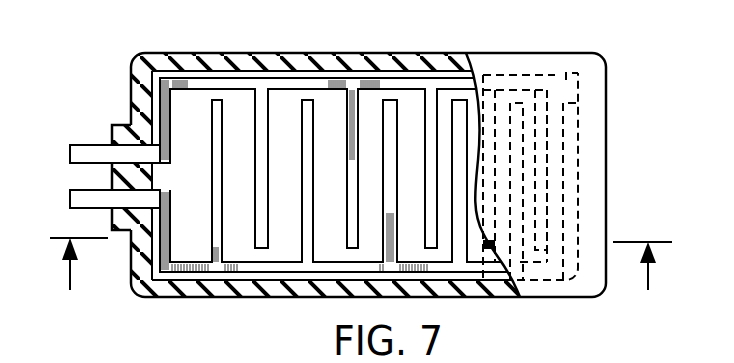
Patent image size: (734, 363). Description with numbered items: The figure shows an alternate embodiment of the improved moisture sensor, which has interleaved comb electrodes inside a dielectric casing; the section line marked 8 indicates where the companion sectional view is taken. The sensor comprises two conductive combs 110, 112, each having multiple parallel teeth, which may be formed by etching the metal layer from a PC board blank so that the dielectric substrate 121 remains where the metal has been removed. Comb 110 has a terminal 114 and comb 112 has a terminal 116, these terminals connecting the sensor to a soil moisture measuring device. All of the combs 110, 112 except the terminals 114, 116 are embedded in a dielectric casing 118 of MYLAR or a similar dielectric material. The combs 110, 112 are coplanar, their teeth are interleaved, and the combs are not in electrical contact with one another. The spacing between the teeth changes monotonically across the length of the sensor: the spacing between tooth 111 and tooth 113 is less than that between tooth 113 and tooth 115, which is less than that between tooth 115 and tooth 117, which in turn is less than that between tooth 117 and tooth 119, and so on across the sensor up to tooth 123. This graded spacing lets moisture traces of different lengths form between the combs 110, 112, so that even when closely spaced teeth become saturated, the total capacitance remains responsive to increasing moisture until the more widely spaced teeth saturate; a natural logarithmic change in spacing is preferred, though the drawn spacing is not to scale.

The conductive comb 110 is at (231, 78).
The conductive comb 112 is at (245, 267).
The dielectric casing 118 is at (138, 113).
The terminal 114 is at (82, 155).
The terminal 116 is at (78, 202).
The tooth 123 is at (208, 107).
The dielectric substrate 121 is at (305, 100).
The tooth 119 is at (460, 100).
The tooth 117 is at (485, 250).
The tooth 115 is at (515, 100).
The tooth 113 is at (537, 250).
The tooth 111 is at (568, 95).
The section line 8- 8 is at (361, 282).